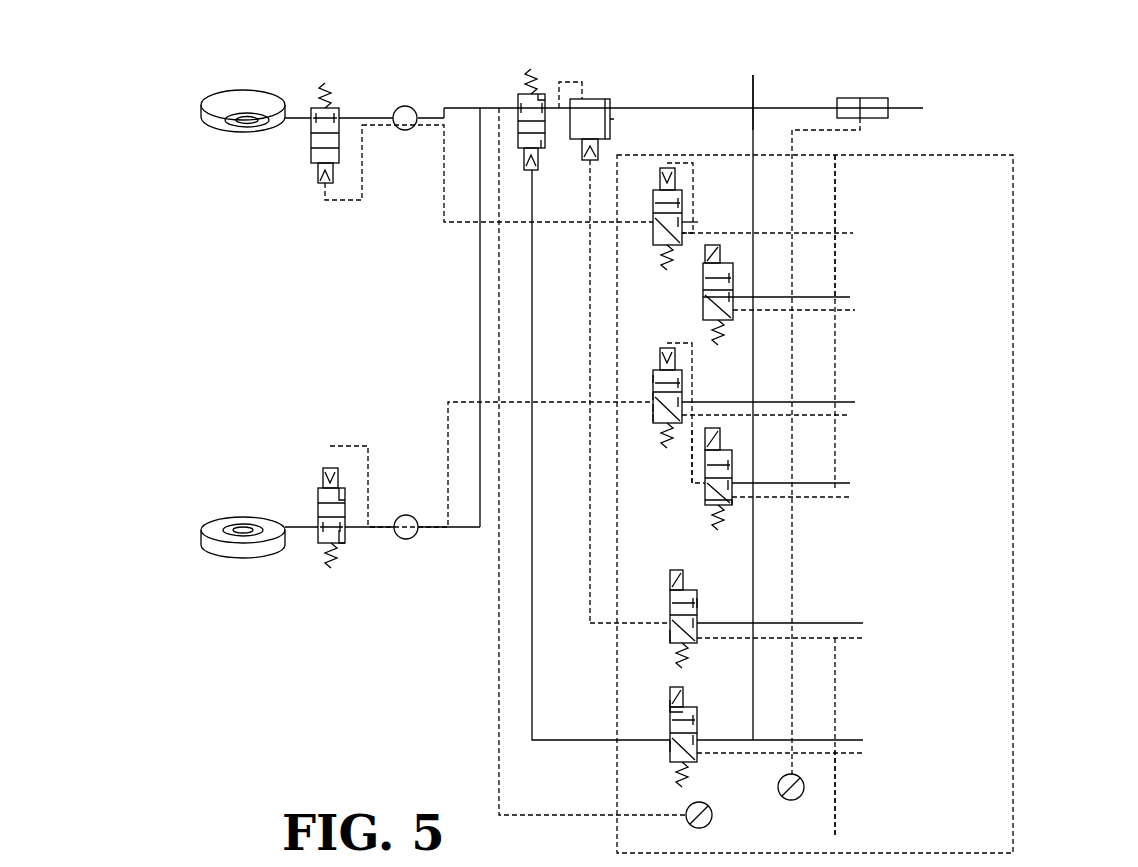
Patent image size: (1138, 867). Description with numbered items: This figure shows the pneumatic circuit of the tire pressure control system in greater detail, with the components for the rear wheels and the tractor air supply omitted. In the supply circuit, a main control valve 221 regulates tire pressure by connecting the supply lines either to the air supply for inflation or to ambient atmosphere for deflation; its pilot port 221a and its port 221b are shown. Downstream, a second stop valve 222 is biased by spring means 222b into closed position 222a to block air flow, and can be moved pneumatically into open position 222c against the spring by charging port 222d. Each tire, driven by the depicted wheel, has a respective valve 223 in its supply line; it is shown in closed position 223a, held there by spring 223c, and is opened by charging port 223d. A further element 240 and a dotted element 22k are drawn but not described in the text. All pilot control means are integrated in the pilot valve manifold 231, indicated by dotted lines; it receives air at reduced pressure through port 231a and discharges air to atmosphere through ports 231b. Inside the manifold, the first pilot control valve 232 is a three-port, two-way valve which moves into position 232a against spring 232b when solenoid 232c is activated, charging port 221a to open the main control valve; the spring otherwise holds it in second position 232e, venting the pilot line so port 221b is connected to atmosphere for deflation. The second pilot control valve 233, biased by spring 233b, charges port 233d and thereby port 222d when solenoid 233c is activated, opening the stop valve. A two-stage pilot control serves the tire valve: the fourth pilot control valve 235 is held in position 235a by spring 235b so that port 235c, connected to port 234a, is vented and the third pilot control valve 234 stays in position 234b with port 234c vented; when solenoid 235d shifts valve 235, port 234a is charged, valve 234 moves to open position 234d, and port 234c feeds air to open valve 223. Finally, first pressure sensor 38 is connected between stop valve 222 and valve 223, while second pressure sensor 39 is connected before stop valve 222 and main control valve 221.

The pump 240 is at (405, 106).
The respective valve 223 is at (311, 140).
The closed position 223a is at (345, 535).
The spring 223c is at (328, 567).
The port 223d is at (323, 480).
The second stop valve 222 is at (518, 108).
The closed position 222a is at (542, 97).
The spring means 222b is at (531, 72).
The open position 222c is at (541, 147).
The port 222d is at (524, 163).
The controller connection 22k is at (580, 90).
The main control valve 221 is at (592, 113).
The port 221a is at (600, 152).
The port 221b is at (610, 123).
The pilot valve manifold 231 is at (1015, 190).
The port 231a is at (753, 120).
The ports 231b is at (835, 192).
The third pilot control valve 234 is at (683, 203).
The port 234a is at (653, 383).
The position 234b is at (653, 417).
The port 234c is at (653, 408).
The open position 234d is at (653, 397).
The fourth pilot control valve 235 is at (733, 278).
The position 235a is at (722, 507).
The spring 235b is at (722, 510).
The port 235c is at (692, 470).
The solenoid 235d is at (720, 445).
The first pilot control valve 232 is at (670, 607).
The position 232a is at (687, 602).
The spring 232b is at (682, 660).
The solenoid 232c is at (683, 583).
The second position 232e is at (670, 632).
The second pilot control valve 233 is at (687, 728).
The spring 233b is at (345, 497).
The solenoid 233c is at (683, 697).
The port 233d is at (670, 747).
The first pressure sensor 38 is at (712, 818).
The second pressure sensor 39 is at (804, 787).